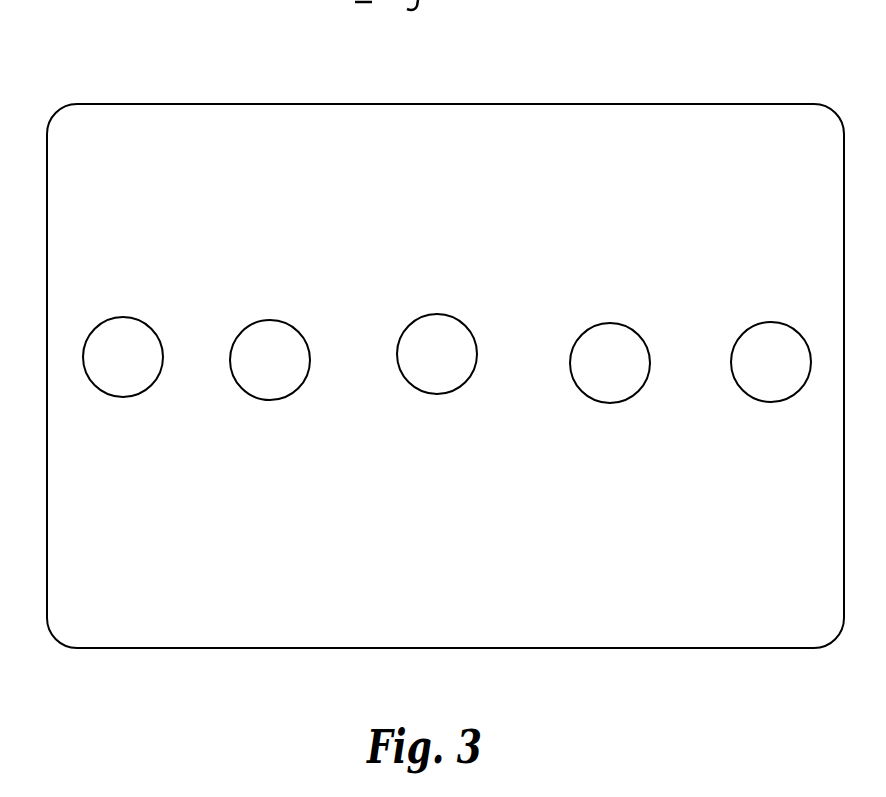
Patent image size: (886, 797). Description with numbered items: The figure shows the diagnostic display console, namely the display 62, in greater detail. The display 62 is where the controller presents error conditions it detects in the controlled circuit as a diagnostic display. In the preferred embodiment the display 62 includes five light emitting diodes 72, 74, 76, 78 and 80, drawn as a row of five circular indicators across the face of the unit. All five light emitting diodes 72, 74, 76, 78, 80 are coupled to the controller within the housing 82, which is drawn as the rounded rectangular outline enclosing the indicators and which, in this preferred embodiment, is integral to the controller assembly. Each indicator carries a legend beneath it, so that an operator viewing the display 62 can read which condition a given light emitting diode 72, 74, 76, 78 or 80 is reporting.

The display 62 is at (137, 72).
The light emitting diode 72 is at (112, 317).
The light emitting diode 74 is at (260, 320).
The light emitting diode 76 is at (430, 314).
The light emitting diode 78 is at (605, 323).
The light emitting diode 80 is at (768, 322).
The housing 82 is at (677, 104).